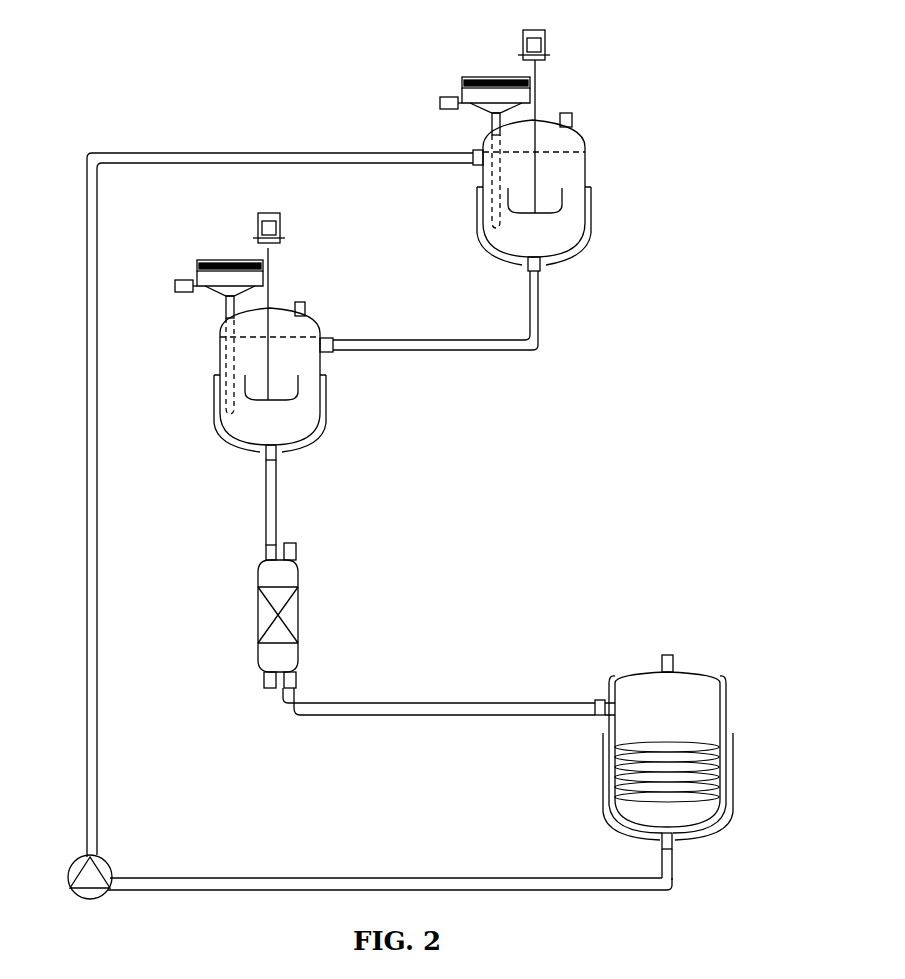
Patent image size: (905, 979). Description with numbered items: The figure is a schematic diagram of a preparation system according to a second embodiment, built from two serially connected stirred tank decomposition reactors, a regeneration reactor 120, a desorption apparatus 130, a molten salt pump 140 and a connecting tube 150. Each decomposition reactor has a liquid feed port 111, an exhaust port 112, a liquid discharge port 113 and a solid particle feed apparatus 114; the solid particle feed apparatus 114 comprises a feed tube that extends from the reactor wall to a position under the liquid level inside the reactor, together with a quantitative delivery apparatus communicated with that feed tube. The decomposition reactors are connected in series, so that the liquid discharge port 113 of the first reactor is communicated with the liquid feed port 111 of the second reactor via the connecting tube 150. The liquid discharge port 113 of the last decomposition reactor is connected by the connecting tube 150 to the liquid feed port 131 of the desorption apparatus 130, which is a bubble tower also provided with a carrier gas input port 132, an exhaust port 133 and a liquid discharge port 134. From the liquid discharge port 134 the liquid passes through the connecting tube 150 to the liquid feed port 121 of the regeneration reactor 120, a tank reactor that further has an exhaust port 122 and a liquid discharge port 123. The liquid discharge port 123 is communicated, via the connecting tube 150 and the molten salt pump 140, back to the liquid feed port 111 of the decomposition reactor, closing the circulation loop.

The liquid feed port 111 is at (480, 160).
The exhaust port 112 is at (572, 120).
The liquid discharge port 113 is at (530, 265).
The solid particle feed apparatus 114 is at (462, 80).
The regeneration reactor 120 is at (616, 680).
The liquid feed port 121 is at (606, 714).
The exhaust port 122 is at (676, 661).
The liquid discharge port 123 is at (662, 834).
The desorption apparatus 130 is at (300, 620).
The liquid feed port 131 is at (264, 547).
The carrier gas input port 132 is at (264, 682).
The exhaust port 133 is at (298, 558).
The liquid discharge port 134 is at (298, 683).
The molten salt pump 140 is at (112, 860).
The connecting tube 150 is at (355, 878).